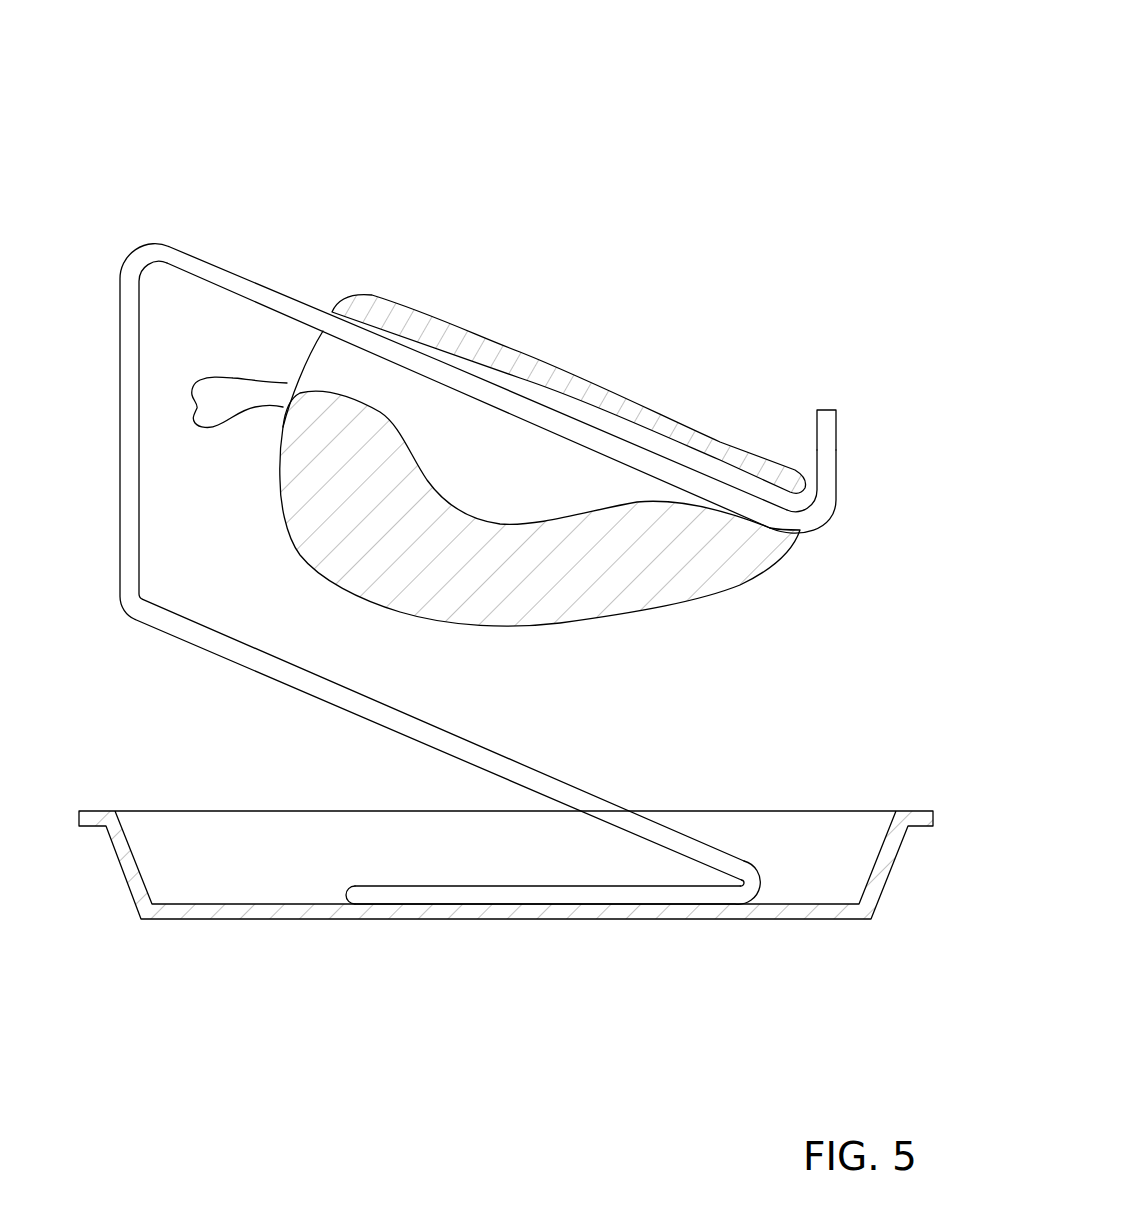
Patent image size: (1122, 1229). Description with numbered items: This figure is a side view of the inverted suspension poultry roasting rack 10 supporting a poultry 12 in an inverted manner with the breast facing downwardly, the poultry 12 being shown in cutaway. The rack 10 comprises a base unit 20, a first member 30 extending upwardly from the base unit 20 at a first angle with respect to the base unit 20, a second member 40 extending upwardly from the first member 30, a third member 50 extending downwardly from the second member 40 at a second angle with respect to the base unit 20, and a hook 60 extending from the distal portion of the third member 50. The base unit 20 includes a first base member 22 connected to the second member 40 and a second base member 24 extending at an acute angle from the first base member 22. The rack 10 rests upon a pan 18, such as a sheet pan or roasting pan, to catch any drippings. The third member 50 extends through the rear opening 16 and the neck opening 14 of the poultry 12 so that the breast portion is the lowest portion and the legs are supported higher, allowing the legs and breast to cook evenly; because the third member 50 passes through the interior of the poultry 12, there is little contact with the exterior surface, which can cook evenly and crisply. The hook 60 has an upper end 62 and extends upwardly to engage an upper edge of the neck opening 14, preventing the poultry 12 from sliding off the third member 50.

The inverted suspension poultry roasting rack 10 is at (698, 112).
The poultry 12 is at (522, 345).
The neck opening 14 is at (800, 526).
The rear opening 16 is at (323, 355).
The pan 18 is at (310, 913).
The base unit 20 is at (420, 877).
The first base member 22 is at (583, 884).
The second base member 24 is at (352, 895).
The first member 30 is at (535, 770).
The second member 40 is at (138, 495).
The third member 50 is at (273, 289).
The hook 60 is at (836, 450).
The upper end 62 is at (828, 408).